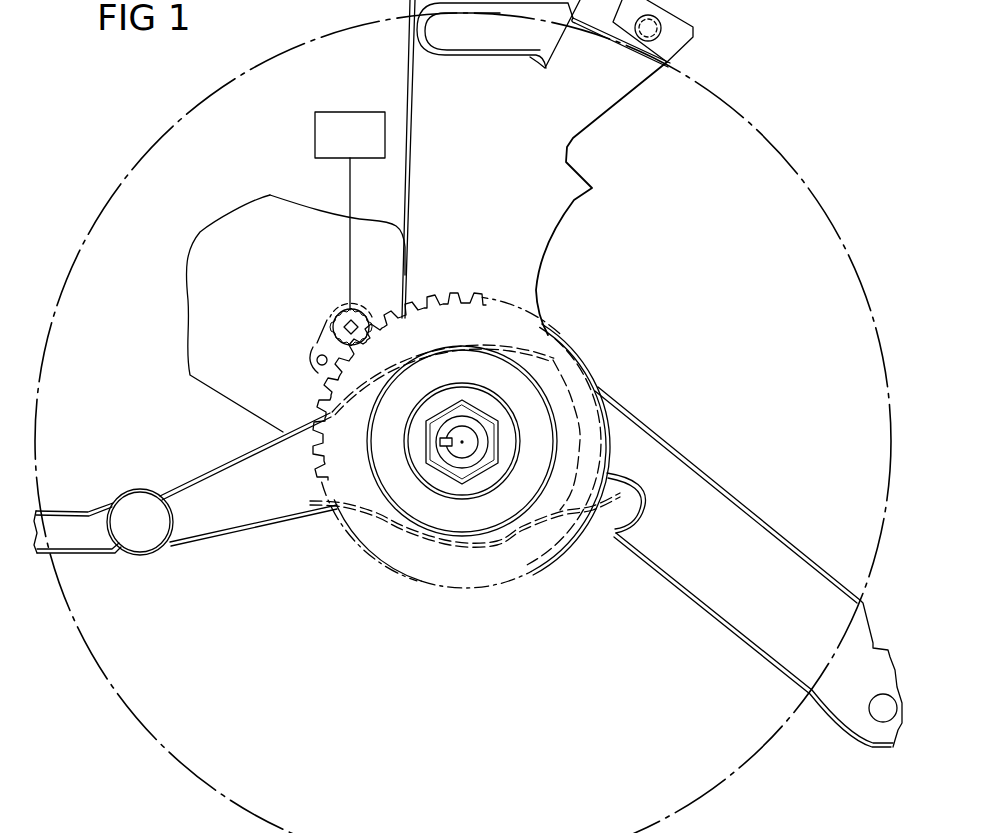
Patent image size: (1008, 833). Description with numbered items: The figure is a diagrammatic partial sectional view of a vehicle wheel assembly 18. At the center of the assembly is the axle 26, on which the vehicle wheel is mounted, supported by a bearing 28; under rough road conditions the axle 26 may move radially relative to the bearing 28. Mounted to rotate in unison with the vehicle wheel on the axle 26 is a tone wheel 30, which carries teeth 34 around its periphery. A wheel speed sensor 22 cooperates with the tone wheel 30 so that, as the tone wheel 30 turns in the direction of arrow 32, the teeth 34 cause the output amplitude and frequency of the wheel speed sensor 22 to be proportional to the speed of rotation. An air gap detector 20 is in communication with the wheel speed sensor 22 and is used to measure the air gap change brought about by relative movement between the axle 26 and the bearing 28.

The wheel assembly 18 is at (133, 150).
The air gap detector 20 is at (343, 110).
The wheel speed sensor 22 is at (342, 320).
The axle 26 is at (437, 485).
The bearing 28 is at (492, 515).
The tone wheel 30 is at (538, 344).
The arrow 32 is at (363, 624).
The teeth 34 is at (432, 300).